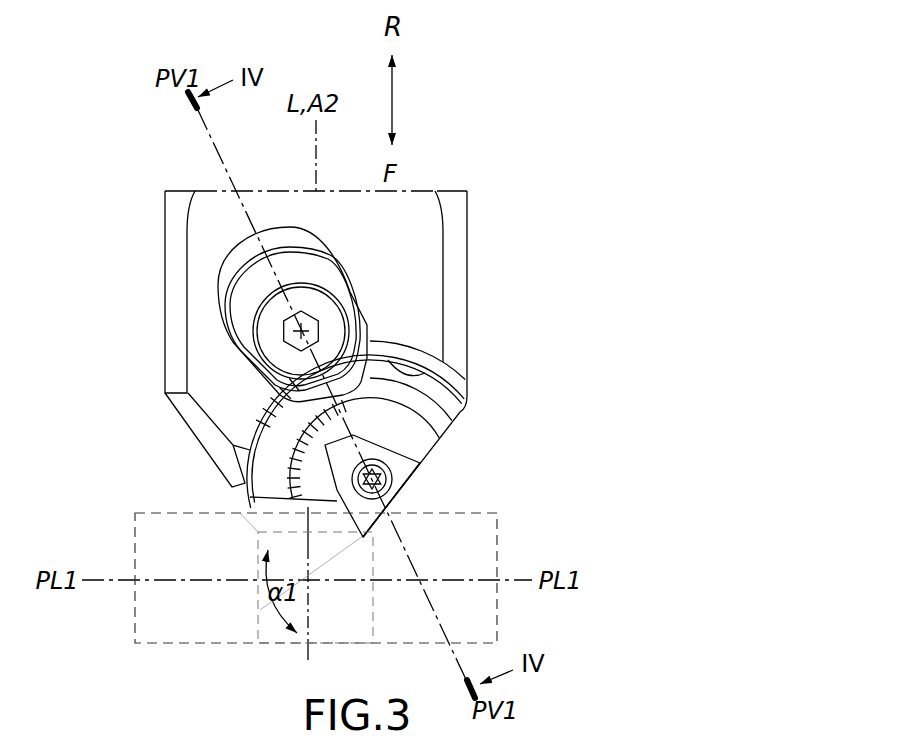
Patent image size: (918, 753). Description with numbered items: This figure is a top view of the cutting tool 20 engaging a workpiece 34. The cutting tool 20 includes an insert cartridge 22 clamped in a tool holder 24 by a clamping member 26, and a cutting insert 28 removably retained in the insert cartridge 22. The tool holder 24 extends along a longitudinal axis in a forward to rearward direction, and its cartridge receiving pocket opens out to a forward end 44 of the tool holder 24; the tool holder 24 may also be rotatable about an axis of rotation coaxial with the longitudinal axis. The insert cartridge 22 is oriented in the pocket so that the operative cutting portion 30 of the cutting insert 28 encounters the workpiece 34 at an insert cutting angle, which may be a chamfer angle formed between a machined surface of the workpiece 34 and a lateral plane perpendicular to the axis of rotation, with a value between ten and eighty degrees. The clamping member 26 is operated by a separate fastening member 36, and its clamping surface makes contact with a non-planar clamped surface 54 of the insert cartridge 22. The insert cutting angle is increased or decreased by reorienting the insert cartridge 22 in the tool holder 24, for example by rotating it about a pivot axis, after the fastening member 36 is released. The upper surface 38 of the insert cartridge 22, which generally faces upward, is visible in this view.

The cutting tool 20 is at (480, 240).
The insert cartridge 22 is at (278, 475).
The tool holder 24 is at (425, 231).
The clamping member 26 is at (262, 283).
The cutting insert 28 is at (413, 484).
The cutting portion 30 is at (392, 532).
The workpiece 34 is at (157, 604).
The fastening member 36 is at (276, 336).
The upper surface 38 is at (408, 432).
The forward end 44 is at (228, 448).
The clamped surface 54 is at (405, 393).